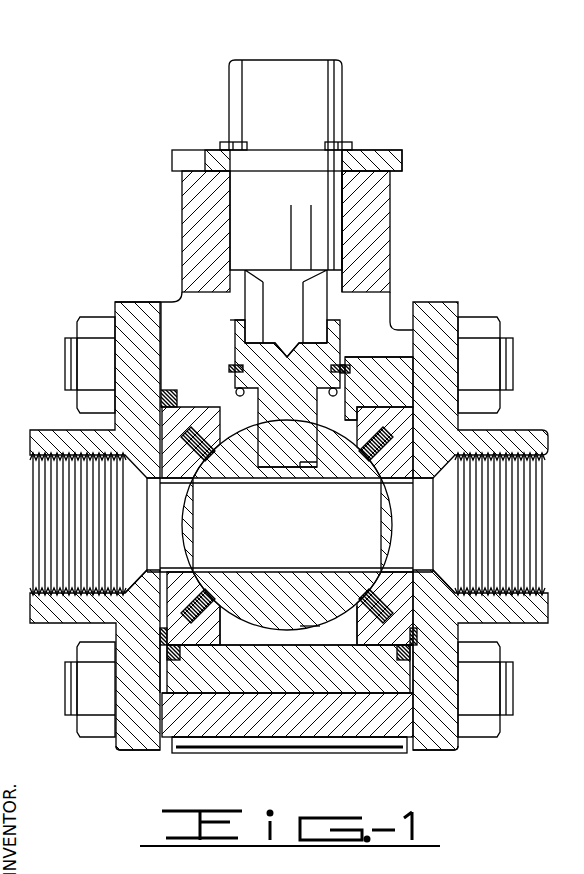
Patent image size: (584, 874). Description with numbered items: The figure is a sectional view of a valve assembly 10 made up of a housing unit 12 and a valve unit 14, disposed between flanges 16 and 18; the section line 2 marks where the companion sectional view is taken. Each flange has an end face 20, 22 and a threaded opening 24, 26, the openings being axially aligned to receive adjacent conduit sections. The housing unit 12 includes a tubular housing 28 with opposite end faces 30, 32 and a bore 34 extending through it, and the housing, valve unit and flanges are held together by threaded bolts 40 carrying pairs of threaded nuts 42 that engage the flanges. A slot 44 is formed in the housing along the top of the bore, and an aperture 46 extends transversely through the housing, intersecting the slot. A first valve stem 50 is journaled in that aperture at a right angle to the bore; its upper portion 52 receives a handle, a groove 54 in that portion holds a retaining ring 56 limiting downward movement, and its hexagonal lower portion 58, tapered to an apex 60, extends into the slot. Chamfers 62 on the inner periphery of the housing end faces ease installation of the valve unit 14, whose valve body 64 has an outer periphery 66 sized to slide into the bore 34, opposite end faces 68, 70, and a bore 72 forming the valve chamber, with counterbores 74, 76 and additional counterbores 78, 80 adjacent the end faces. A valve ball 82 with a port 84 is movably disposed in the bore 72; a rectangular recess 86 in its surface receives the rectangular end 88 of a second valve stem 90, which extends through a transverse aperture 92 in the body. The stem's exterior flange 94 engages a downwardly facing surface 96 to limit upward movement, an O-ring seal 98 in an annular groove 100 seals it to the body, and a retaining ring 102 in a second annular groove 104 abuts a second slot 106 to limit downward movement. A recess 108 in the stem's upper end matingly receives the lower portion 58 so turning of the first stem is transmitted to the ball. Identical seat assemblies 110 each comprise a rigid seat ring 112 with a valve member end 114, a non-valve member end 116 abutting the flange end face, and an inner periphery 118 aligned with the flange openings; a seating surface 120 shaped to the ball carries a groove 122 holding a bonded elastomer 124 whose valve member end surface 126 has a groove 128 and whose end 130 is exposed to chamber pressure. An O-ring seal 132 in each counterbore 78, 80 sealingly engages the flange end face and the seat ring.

The section line 2- 2 is at (285, 40).
The valve assembly 10 is at (380, 104).
The housing unit 12 is at (395, 195).
The valve unit 14 is at (423, 360).
The flange 16 is at (119, 752).
The flange 18 is at (456, 748).
The end face 20 is at (172, 753).
The end face 22 is at (407, 753).
The threaded opening 24 is at (48, 588).
The threaded opening 26 is at (542, 580).
The tubular housing 28 is at (368, 252).
The end face 30 is at (165, 715).
The end face 32 is at (418, 710).
The bore 34 is at (312, 706).
The threaded bolts 40 is at (65, 360).
The threaded nuts 42 is at (93, 316).
The slot 44 is at (190, 321).
The aperture 46 is at (232, 210).
The first valve stem 50 is at (372, 151).
The upper portion 52 is at (340, 74).
The groove 54 is at (250, 148).
The retaining ring 56 is at (226, 142).
The lower portion 58 is at (305, 296).
The apex 60 is at (284, 347).
The chamfers 62 is at (172, 697).
The valve body 64 is at (322, 690).
The outer periphery 66 is at (250, 697).
The end face 68 is at (162, 668).
The end face 70 is at (418, 672).
The bore 72 is at (270, 632).
The counterbore 74 is at (196, 642).
The counterbore 76 is at (365, 642).
The counterbore 78 is at (173, 660).
The counterbore 80 is at (400, 660).
The valve ball 82 is at (306, 571).
The port 84 is at (278, 524).
The rectangular recess 86 is at (302, 468).
The rectangular end 88 is at (268, 452).
The second valve stem 90 is at (348, 384).
The aperture 92 is at (232, 364).
The exterior flange 94 is at (350, 404).
The downwardly facing surface 96 is at (235, 393).
The O-ring seal 98 is at (226, 386).
The annular groove 100 is at (246, 392).
The retaining ring 102 is at (347, 357).
The second annular groove 104 is at (330, 369).
The second slot 106 is at (352, 368).
The recess 108 is at (233, 320).
The seat assemblies 110 is at (210, 590).
The seat ring 112 is at (165, 595).
The valve member end 114 is at (226, 644).
The non-valve member end 116 is at (160, 606).
The inner periphery 118 is at (394, 522).
The seating surface 120 is at (372, 572).
The groove 122 is at (420, 608).
The elastomer 124 is at (220, 612).
The valve member end surface 126 is at (357, 610).
The groove 128 is at (212, 598).
The end 130 is at (320, 625).
The O-ring seal 132 is at (161, 638).